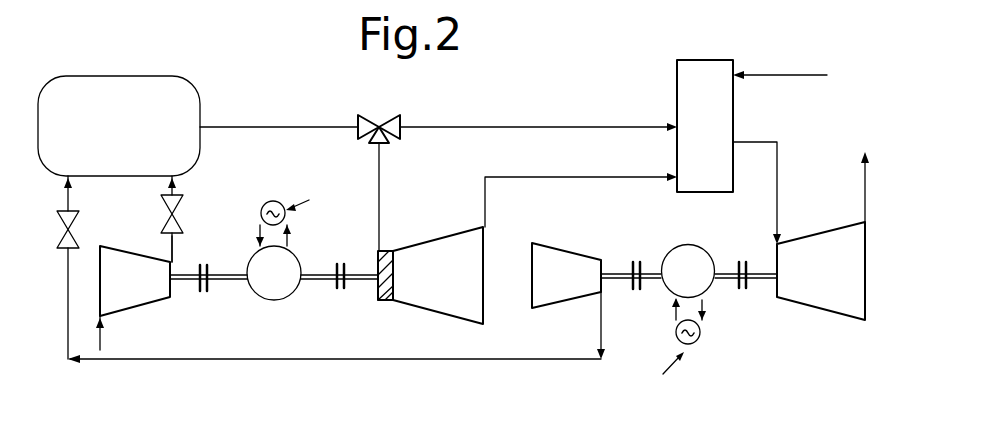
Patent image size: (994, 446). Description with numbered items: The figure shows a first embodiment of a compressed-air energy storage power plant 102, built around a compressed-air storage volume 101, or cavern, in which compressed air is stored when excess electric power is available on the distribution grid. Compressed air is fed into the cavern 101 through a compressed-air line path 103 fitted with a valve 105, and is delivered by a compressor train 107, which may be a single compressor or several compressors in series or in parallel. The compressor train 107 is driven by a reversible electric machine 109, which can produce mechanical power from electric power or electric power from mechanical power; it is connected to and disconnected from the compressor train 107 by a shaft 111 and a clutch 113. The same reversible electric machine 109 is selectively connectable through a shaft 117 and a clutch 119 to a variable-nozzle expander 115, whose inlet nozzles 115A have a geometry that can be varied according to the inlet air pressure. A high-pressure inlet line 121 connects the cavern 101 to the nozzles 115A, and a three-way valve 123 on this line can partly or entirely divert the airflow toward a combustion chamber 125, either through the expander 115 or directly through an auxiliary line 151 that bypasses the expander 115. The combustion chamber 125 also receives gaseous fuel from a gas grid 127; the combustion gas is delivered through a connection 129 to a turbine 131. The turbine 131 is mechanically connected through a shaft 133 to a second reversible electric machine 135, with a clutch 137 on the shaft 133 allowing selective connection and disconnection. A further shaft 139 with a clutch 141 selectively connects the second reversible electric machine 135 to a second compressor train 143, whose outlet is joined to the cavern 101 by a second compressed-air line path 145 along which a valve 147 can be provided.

The compressed-air storage volume 101 is at (118, 90).
The power plant 102 is at (610, 60).
The compressed-air line path 103 is at (176, 246).
The valve 105 is at (181, 210).
The compressor train 107 is at (134, 268).
The reversible electric machine 109 is at (266, 293).
The shaft 111 is at (235, 278).
The clutch 113 is at (196, 285).
The expander 115 is at (438, 238).
The nozzles 115A is at (382, 302).
The shaft 117 is at (362, 283).
The clutch 119 is at (355, 243).
The high-pressure inlet line 121 is at (283, 126).
The three-way valve 123 is at (381, 125).
The combustion chamber 125 is at (692, 97).
The gas grid 127 is at (789, 76).
The connection 129 is at (777, 186).
The turbine 131 is at (828, 298).
The shaft 133 is at (767, 279).
The second reversible electric machine 135 is at (695, 263).
The clutch 137 is at (747, 266).
The further shaft 139 is at (653, 279).
The clutch 141 is at (627, 270).
The second compressor train 143 is at (558, 258).
The second compressed-air line path 145 is at (332, 360).
The valve 147 is at (80, 221).
The auxiliary line 151 is at (507, 127).